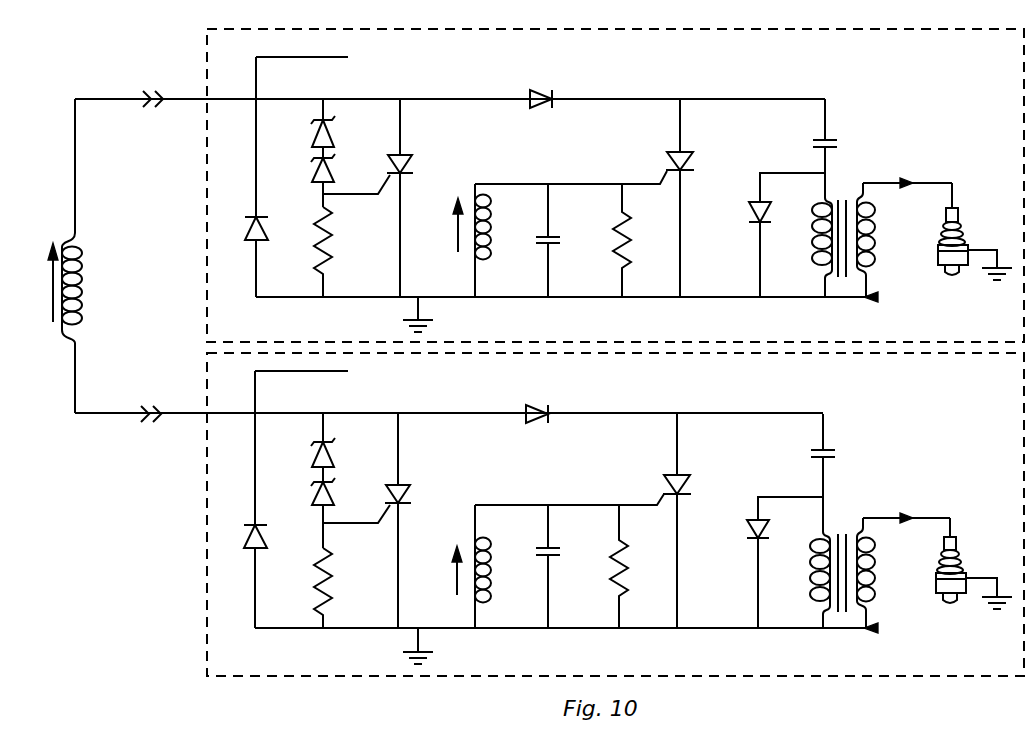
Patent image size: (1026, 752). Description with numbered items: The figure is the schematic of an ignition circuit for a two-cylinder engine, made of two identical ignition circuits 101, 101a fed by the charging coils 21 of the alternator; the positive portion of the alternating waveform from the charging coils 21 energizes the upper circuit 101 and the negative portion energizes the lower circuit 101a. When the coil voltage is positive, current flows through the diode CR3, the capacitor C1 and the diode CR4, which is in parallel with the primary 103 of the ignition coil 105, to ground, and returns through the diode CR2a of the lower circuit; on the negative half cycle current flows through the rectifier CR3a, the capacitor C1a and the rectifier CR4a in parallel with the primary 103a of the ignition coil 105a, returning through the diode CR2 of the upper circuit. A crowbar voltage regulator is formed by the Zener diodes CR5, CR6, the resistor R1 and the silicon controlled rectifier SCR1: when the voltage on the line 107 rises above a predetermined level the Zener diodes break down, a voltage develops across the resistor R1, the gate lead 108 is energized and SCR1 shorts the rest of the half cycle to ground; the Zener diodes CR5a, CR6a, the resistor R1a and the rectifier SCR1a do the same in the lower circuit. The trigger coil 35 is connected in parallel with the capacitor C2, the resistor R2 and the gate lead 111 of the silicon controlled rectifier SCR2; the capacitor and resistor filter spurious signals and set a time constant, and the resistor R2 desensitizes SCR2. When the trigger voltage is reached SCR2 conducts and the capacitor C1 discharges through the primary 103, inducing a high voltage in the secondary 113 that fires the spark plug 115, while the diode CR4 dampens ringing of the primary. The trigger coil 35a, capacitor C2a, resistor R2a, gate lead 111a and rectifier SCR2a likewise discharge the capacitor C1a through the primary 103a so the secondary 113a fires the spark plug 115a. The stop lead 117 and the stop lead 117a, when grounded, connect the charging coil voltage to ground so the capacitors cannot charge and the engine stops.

The charging coils 21 is at (84, 292).
The trigger coil 35 is at (459, 240).
The trigger coil 35a is at (454, 566).
The ignition circuit 101 is at (885, 30).
The ignition circuit 101a is at (927, 678).
The primary 103 is at (816, 261).
The primary 103a is at (807, 580).
The ignition coil 105 is at (878, 297).
The ignition coil 105a is at (878, 628).
The line 107 is at (428, 100).
The gate lead 108 is at (345, 197).
The gate lead 111 is at (639, 186).
The gate lead 111a is at (639, 507).
The secondary 113 is at (873, 233).
The secondary 113a is at (903, 570).
The spark plug 115 is at (964, 242).
The spark plug 115a is at (963, 568).
The stop lead 117 is at (317, 58).
The stop lead 117a is at (317, 374).
The diode CR2 is at (272, 228).
The diode CR2a is at (276, 536).
The diode CR3 is at (558, 92).
The rectifier CR3a is at (561, 408).
The diode CR4 is at (787, 235).
The rectifier CR4a is at (785, 562).
The Zener diode CR5 is at (343, 128).
The Zener diode CR5a is at (343, 448).
The Zener diode CR6 is at (340, 180).
The Zener diode CR6a is at (343, 513).
The silicon controlled rectifier SCR1 is at (422, 198).
The silicon controlled rectifier SCR1a is at (425, 521).
The silicon controlled rectifier SCR2 is at (703, 198).
The silicon controlled rectifier SCR2a is at (705, 521).
The capacitor C1 is at (840, 148).
The capacitor C1a is at (843, 473).
The capacitor C2 is at (560, 240).
The capacitor C2a is at (564, 566).
The resistor R1 is at (338, 252).
The resistor R1a is at (343, 588).
The resistor R2 is at (634, 240).
The resistor R2a is at (636, 566).